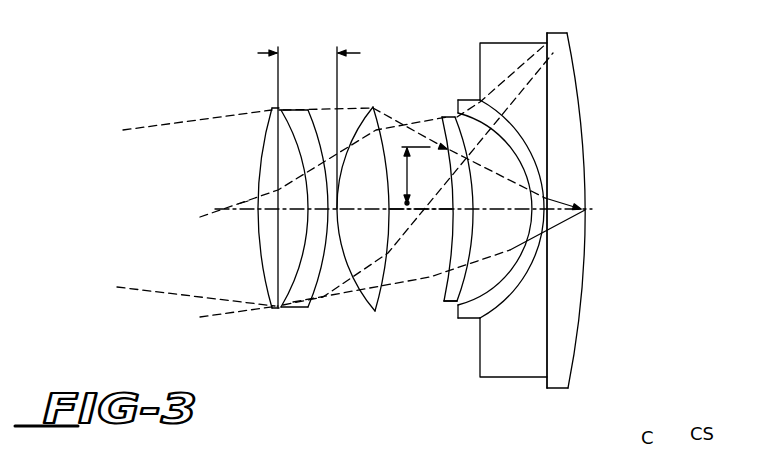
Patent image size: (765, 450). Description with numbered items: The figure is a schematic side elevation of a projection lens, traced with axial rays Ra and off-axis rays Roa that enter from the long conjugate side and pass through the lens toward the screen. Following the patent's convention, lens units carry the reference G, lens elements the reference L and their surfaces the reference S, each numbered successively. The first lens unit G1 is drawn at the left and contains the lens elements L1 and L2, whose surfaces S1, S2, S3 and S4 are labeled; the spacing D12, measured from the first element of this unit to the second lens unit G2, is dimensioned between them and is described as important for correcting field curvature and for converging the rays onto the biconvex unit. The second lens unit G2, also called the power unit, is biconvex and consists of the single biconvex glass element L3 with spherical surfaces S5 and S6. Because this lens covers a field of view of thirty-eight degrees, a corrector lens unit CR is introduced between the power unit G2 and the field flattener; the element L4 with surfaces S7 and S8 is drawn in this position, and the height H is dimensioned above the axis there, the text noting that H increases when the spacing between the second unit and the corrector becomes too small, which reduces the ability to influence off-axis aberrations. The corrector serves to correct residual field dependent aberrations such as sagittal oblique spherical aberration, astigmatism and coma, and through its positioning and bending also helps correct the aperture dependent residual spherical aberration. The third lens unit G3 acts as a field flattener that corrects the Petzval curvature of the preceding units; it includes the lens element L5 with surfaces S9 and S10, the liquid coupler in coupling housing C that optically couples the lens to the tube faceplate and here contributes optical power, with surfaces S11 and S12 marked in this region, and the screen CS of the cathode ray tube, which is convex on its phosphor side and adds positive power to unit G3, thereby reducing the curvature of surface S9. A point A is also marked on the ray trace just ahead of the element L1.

The first lens element L1 is at (276, 109).
The second lens element L2 is at (308, 111).
The biconvex lens element L3 is at (374, 107).
The fourth lens element L4 is at (446, 117).
The fifth lens element L5 is at (466, 100).
The liquid optical coupler housing C is at (511, 43).
The CRT screen CS is at (553, 53).
The first lens surface S1 is at (262, 240).
The second lens surface S2 is at (277, 268).
The third lens surface S3 is at (304, 250).
The fourth lens surface S4 is at (315, 302).
The fifth lens surface S5 is at (346, 300).
The sixth lens surface S6 is at (396, 288).
The seventh lens surface S7 is at (450, 246).
The eighth lens surface S8 is at (472, 222).
The ninth lens surface S9 is at (508, 283).
The tenth lens surface S10 is at (527, 277).
The eleventh lens surface S11 is at (548, 258).
The twelfth lens surface S12 is at (588, 222).
The first lens unit G1 is at (323, 358).
The second lens unit G2 is at (403, 358).
The third lens unit G3 is at (577, 398).
The axial rays Ra is at (128, 125).
The off-axis rays Roa is at (210, 215).
The aperture point A is at (243, 207).
The spacing between first element and second lens unit D12 is at (309, 128).
The ray height H is at (414, 176).
The corrector lens unit CR is at (446, 306).